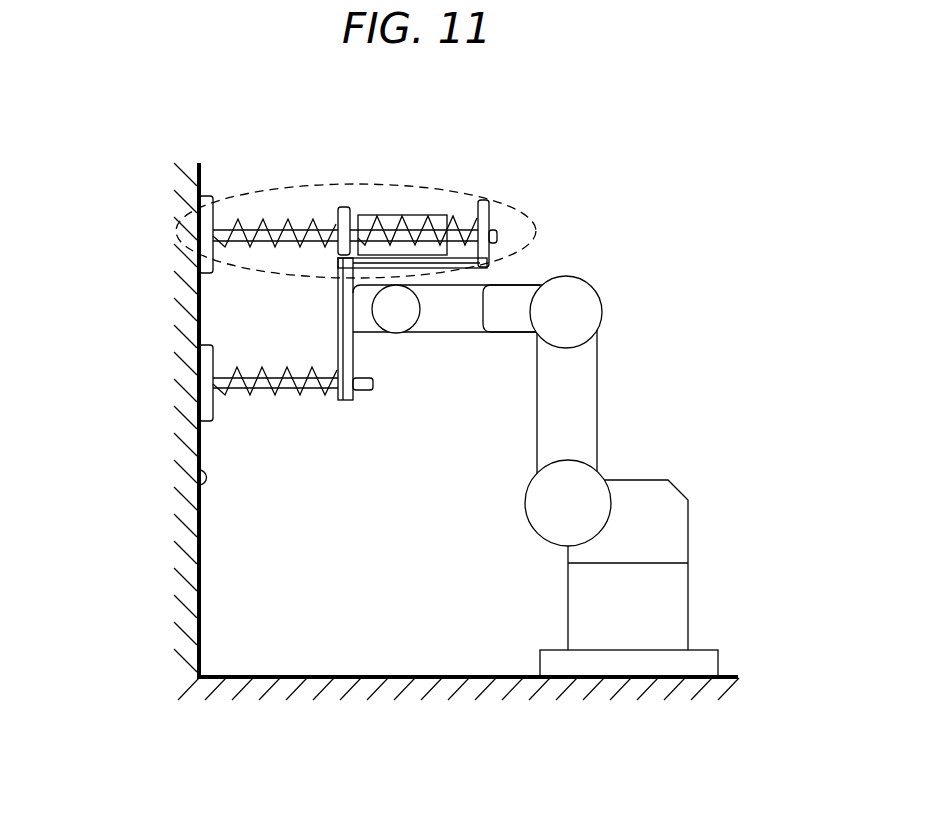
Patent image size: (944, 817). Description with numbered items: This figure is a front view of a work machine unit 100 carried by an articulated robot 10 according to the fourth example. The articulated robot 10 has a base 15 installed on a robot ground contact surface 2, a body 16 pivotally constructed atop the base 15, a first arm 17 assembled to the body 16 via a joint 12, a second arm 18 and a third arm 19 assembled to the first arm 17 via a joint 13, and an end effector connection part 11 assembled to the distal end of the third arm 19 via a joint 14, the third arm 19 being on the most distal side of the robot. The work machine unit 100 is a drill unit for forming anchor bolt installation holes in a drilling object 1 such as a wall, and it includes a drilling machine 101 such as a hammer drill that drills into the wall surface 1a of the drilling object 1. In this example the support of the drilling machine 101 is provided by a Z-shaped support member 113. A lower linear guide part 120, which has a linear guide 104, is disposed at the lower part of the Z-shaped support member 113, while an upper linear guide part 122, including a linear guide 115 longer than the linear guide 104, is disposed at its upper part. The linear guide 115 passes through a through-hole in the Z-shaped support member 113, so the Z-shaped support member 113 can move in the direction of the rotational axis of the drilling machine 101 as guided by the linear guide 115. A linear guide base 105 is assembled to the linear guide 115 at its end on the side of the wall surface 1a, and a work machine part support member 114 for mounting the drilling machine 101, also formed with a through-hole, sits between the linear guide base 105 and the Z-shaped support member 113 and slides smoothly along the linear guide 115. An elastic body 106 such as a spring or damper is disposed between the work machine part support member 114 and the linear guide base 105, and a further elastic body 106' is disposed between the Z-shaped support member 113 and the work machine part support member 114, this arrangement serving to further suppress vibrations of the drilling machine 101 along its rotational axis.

The drilling object 1 is at (190, 303).
The wall surface 1a is at (197, 487).
The robot ground contact surface 2 is at (405, 676).
The articulated robot 10 is at (677, 342).
The end effector connection part 11 is at (360, 303).
The joint 12 is at (537, 508).
The joint 13 is at (593, 297).
The joint 14 is at (397, 333).
The base 15 is at (680, 593).
The body 16 is at (675, 493).
The first arm 17 is at (590, 385).
The second arm 18 is at (503, 323).
The third arm 19 is at (450, 322).
The work machine unit 100 is at (629, 173).
The drilling machine 101 is at (426, 213).
The linear guide 104 is at (363, 390).
The linear guide base 105 is at (206, 198).
The elastic body 106 is at (275, 201).
The elastic body 106' is at (414, 205).
The Z-shaped support member 113 is at (483, 203).
The work machine part support member 114 is at (345, 207).
The linear guide 115 is at (505, 237).
The linear guide part 120 is at (277, 410).
The linear guide part 122 is at (322, 209).